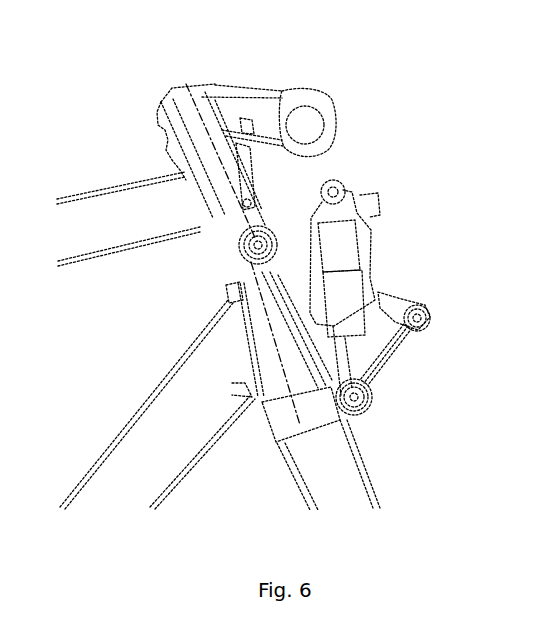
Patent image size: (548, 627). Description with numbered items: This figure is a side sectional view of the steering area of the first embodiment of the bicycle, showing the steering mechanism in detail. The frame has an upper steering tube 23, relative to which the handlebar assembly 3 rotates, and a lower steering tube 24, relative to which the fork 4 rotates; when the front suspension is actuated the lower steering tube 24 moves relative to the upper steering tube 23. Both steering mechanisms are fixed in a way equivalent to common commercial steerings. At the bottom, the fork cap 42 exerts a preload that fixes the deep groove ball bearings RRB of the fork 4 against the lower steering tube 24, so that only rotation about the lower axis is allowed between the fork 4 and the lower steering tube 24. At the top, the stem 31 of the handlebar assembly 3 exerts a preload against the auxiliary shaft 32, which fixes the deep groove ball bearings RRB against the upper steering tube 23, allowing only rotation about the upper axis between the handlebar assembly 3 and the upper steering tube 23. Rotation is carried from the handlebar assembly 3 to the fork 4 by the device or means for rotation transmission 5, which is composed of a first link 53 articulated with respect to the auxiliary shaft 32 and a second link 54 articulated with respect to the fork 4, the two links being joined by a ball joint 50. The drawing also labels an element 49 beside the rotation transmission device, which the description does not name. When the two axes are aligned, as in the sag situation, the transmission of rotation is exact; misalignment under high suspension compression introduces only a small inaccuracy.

The handlebar assembly 3 is at (266, 69).
The stem 31 is at (225, 100).
The auxiliary shaft 32 is at (236, 180).
The shock absorber 49 is at (362, 235).
The first link 53 is at (388, 298).
The device or means for rotation transmission 5 is at (456, 288).
The ball joint 50 is at (420, 319).
The second link 54 is at (398, 356).
The fork cap 42 is at (238, 280).
The fork 4 is at (279, 484).
The upper steering tube 23 is at (123, 220).
The lower steering tube 24 is at (168, 397).
The deep groove ball bearings RRB is at (196, 218).